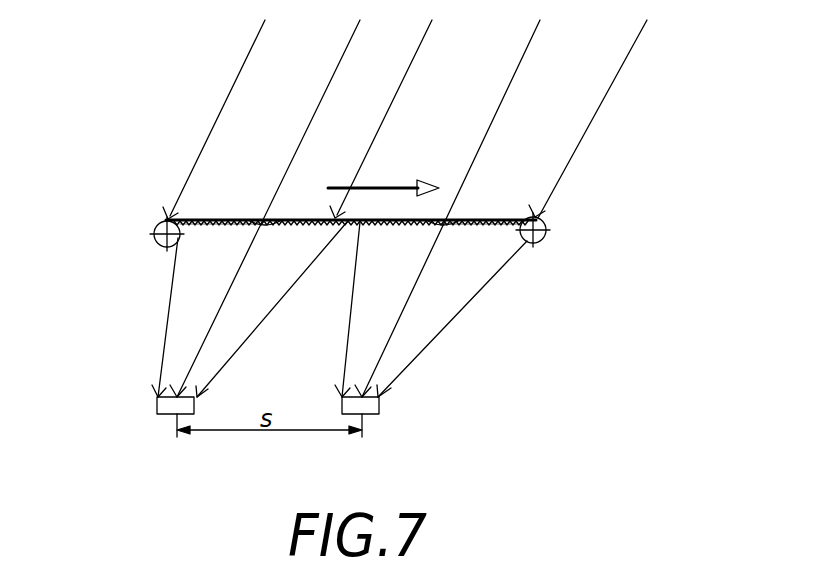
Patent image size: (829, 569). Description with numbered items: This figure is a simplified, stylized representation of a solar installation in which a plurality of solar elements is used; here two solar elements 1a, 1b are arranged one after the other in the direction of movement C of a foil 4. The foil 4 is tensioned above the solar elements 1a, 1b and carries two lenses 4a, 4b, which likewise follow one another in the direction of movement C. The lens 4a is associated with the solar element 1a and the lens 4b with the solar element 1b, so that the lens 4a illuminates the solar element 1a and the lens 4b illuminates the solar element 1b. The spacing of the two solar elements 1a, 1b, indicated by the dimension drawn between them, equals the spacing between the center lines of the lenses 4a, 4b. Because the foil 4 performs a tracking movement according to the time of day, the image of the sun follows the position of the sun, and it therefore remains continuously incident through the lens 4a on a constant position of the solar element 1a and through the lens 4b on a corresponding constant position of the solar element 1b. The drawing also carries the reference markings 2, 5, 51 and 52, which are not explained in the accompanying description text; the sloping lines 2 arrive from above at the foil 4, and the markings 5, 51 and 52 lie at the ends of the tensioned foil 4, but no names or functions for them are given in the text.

The light beams 2 is at (238, 75).
The foil 4 is at (481, 212).
The lens 4a is at (473, 228).
The lens 4b is at (220, 228).
The conveyor 5 is at (357, 241).
The roller 51 is at (157, 241).
The roller 52 is at (543, 240).
The solar element 1a is at (372, 406).
The solar element 1b is at (168, 407).
The direction of movement C is at (386, 185).